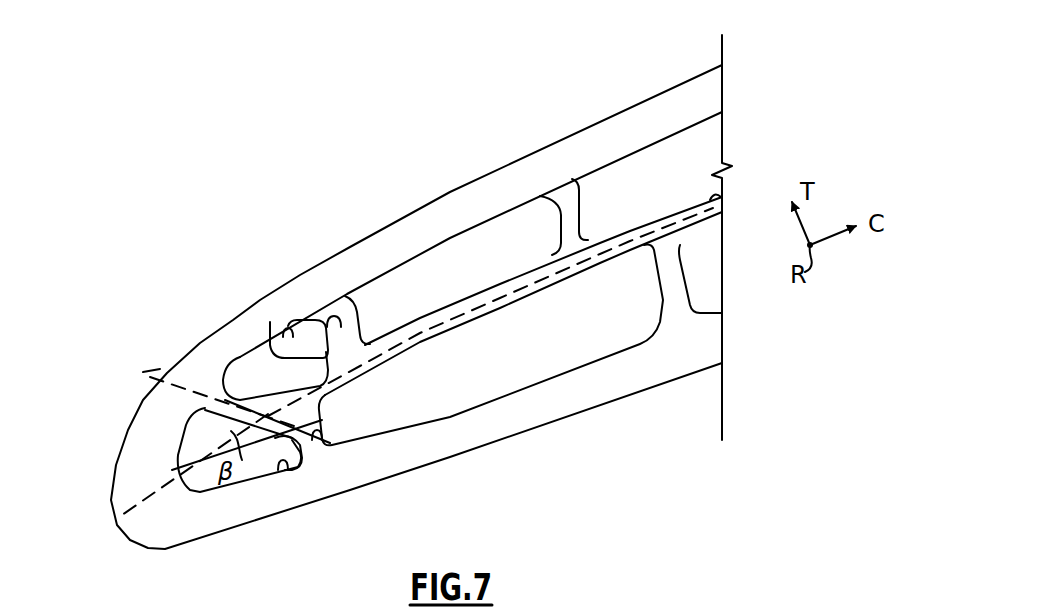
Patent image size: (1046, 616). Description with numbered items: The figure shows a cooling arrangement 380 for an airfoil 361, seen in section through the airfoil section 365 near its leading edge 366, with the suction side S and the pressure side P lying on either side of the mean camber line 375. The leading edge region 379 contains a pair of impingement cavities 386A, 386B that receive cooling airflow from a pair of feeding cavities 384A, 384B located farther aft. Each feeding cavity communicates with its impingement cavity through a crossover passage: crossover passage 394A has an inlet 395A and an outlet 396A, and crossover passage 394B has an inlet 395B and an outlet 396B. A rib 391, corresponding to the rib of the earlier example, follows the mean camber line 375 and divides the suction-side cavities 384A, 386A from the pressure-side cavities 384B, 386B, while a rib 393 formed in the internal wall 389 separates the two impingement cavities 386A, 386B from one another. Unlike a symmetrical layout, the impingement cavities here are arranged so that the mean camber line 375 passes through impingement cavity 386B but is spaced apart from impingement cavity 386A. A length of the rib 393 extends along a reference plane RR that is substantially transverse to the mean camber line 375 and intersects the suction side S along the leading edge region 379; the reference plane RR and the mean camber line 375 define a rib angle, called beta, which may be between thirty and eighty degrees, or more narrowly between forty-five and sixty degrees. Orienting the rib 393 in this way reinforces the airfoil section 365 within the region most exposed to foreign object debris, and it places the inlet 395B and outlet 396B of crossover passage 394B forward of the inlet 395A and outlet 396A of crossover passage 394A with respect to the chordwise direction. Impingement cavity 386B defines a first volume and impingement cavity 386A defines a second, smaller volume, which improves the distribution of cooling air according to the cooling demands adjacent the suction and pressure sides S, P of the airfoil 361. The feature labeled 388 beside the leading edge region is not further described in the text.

The airfoil 361 is at (113, 148).
The airfoil section 365 is at (658, 80).
The leading edge 366 is at (123, 518).
The mean camber line 375 is at (721, 199).
The leading edge region 379 is at (288, 271).
The cooling arrangement 380 is at (138, 260).
The feeding cavity 384A is at (510, 214).
The feeding cavity 384B is at (508, 394).
The impingement cavity 386A is at (288, 328).
The impingement cavity 386B is at (292, 465).
The leading edge cavity 388 is at (167, 411).
The internal wall 389 is at (566, 272).
The rib 391 is at (477, 318).
The rib 393 is at (190, 440).
The crossover passage 394A is at (335, 320).
The crossover passage 394B is at (330, 448).
The inlet 395A is at (362, 343).
The inlet 395B is at (336, 427).
The outlet 396A is at (270, 345).
The outlet 396B is at (275, 462).
The suction side S is at (612, 112).
The pressure side P is at (616, 404).
The reference plane RR is at (155, 368).